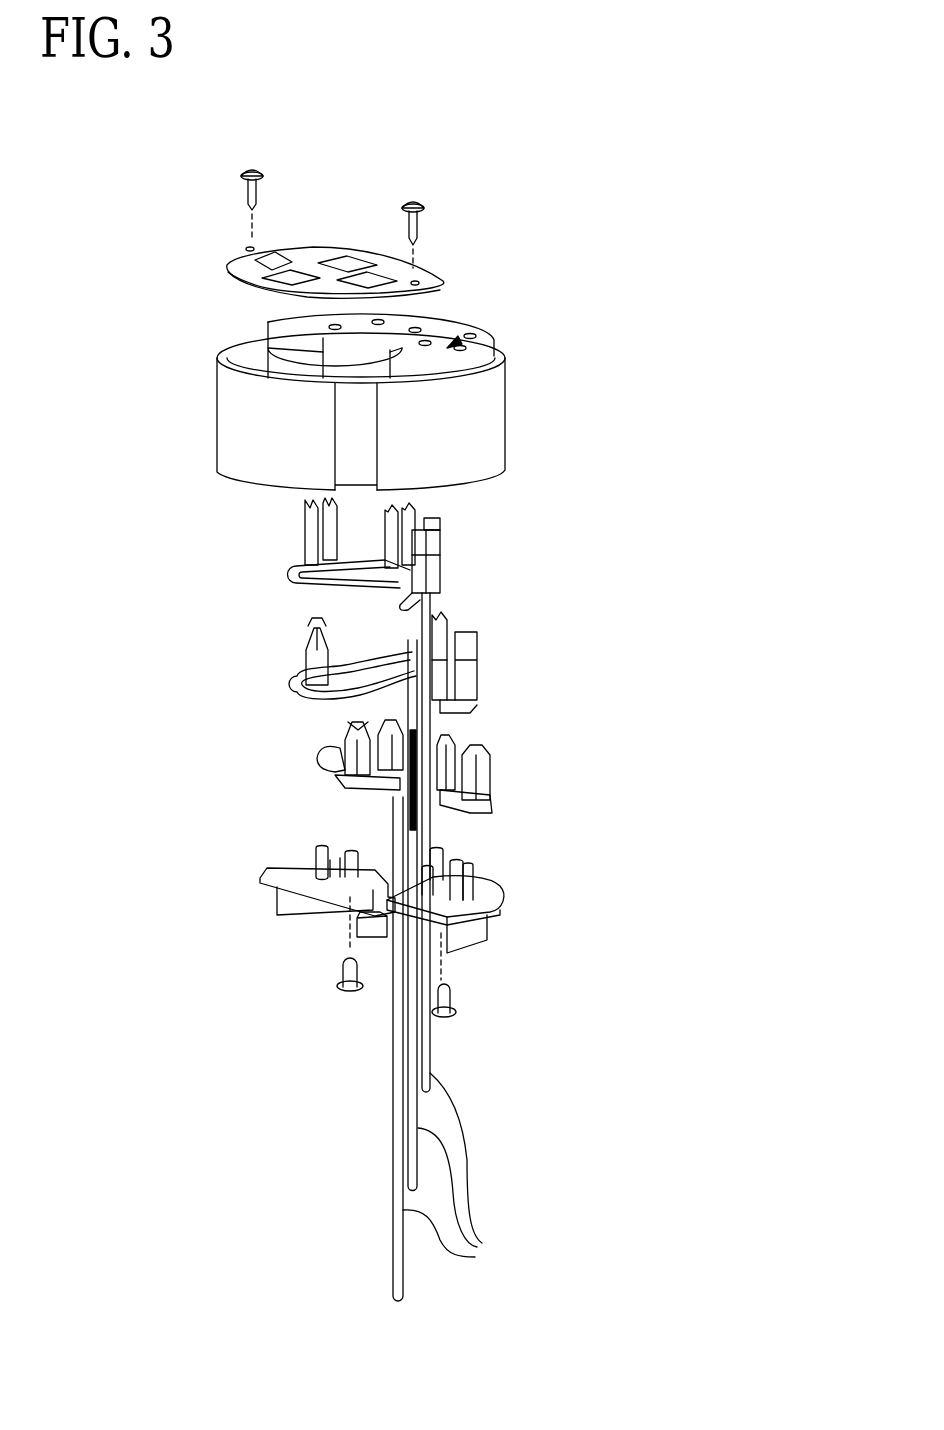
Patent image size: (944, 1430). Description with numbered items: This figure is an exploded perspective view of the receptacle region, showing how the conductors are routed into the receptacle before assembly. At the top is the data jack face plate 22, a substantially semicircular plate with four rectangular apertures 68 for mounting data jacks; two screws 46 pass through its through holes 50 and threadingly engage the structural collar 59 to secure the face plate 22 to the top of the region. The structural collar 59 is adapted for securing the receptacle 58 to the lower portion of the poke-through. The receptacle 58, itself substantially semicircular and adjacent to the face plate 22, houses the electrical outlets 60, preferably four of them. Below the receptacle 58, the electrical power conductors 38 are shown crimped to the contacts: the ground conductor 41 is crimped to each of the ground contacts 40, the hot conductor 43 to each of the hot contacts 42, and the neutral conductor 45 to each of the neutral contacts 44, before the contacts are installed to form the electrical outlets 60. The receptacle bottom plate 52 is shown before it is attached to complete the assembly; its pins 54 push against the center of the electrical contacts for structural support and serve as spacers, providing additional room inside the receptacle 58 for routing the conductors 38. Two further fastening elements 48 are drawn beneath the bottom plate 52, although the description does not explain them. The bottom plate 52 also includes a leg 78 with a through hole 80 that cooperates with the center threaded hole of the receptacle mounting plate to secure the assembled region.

The data jack face plate 22 is at (237, 255).
The electrical power conductors 38 is at (456, 947).
The ground contacts 40 is at (440, 562).
The ground conductor 41 is at (292, 570).
The hot contacts 42 is at (473, 665).
The hot conductor 43 is at (293, 687).
The neutral contacts 44 is at (492, 785).
The neutral conductor 45 is at (317, 758).
The screws 46 is at (249, 172).
The pins 48 is at (340, 970).
The through holes 50 is at (250, 248).
The receptacle bottom plate 52 is at (483, 888).
The pins 54 is at (307, 855).
The receptacle 58 is at (455, 340).
The structural collar 59 is at (270, 435).
The electrical outlets 60 is at (430, 322).
The rectangular apertures 68 is at (250, 285).
The leg 78 is at (380, 932).
The through hole 80 is at (367, 938).